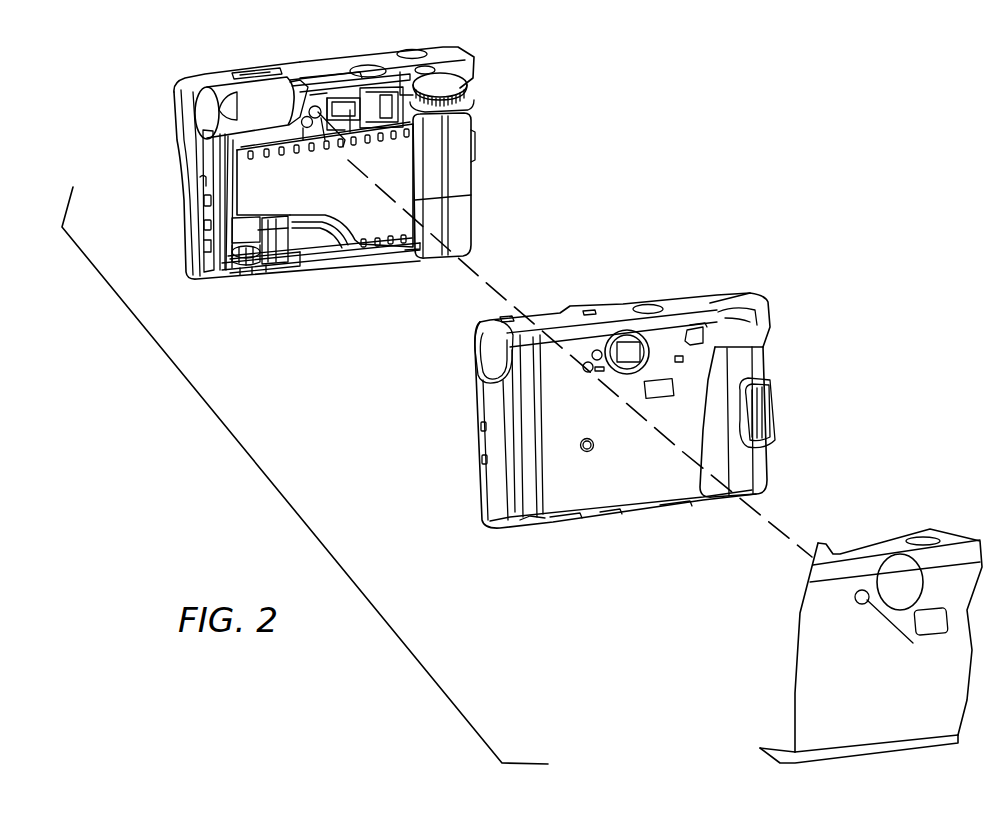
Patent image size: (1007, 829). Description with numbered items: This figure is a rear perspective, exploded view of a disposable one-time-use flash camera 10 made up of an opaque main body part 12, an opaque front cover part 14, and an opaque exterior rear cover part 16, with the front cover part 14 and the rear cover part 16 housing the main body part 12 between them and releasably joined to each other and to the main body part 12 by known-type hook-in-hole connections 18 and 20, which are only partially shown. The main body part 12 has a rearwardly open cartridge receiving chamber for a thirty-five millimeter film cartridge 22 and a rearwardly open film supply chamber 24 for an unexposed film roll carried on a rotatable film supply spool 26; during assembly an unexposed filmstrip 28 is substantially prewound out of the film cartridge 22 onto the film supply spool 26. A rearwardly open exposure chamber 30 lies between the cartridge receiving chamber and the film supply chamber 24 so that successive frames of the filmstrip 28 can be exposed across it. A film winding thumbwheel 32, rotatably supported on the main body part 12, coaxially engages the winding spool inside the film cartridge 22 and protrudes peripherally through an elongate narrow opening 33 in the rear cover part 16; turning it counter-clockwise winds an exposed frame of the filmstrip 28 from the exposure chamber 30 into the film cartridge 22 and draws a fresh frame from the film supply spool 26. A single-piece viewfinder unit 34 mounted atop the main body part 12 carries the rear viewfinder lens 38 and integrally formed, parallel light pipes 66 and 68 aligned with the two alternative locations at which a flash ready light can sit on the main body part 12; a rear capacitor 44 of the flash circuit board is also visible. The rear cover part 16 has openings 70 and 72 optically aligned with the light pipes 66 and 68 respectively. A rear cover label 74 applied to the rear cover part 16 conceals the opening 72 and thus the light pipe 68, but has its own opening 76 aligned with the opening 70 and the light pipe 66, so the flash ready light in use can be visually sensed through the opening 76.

The disposable one-time-use flash camera 10 is at (775, 186).
The main body part 12 is at (213, 290).
The front cover part 14 is at (183, 169).
The rear cover part 16 is at (480, 530).
The hook-in-hole connection 18 is at (204, 188).
The hook-in-hole connection 20 is at (482, 460).
The film cartridge 22 is at (457, 163).
The film supply chamber 24 is at (277, 250).
The film supply spool 26 is at (242, 263).
The filmstrip 28 is at (372, 215).
The exposure chamber 30 is at (320, 218).
The film winding thumbwheel 32 is at (457, 80).
The elongate narrow opening 33 is at (765, 330).
The single-piece viewfinder unit 34 is at (310, 80).
The rear viewfinder lens 38 is at (340, 102).
The rear capacitor 44 is at (228, 92).
The light pipe 66 is at (307, 128).
The light pipe 68 is at (321, 113).
The opening 70 is at (590, 371).
The opening 72 is at (587, 337).
The rear cover label 74 is at (795, 689).
The opening 76 is at (862, 604).